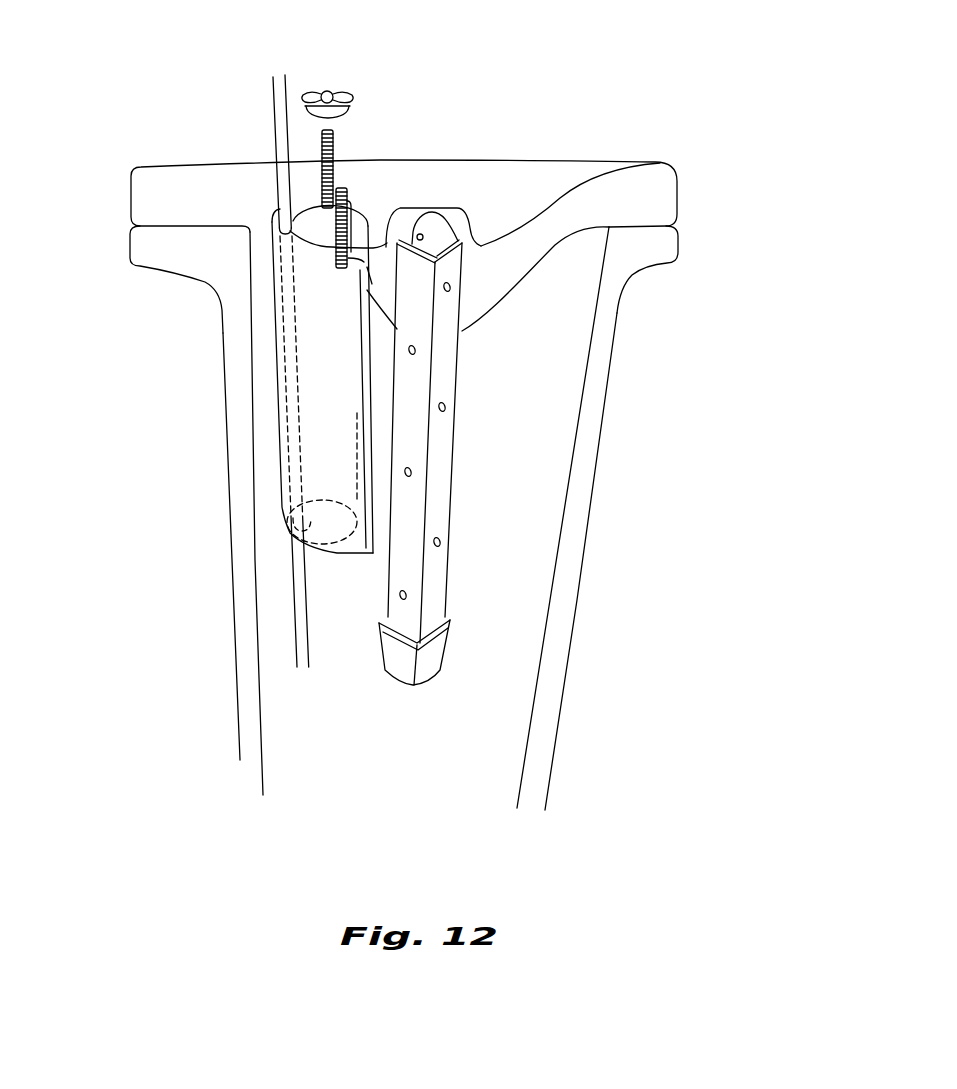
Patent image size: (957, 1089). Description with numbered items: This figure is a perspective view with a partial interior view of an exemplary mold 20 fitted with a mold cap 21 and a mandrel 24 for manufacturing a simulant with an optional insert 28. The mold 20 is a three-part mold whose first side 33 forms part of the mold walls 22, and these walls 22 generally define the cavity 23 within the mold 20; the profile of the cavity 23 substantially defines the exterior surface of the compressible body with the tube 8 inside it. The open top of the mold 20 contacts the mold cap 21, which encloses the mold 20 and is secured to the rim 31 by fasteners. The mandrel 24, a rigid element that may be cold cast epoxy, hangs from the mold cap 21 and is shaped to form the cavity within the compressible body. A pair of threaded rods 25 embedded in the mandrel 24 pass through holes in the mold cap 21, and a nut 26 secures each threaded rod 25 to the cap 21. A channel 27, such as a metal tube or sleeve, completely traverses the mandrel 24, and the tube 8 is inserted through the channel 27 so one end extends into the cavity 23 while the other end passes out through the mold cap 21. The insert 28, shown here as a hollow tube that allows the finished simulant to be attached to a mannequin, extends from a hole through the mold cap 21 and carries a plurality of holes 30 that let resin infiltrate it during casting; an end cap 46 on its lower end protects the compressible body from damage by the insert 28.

The tube 8 is at (282, 96).
The mold 20 is at (690, 306).
The mold cap 21 is at (657, 191).
The mold walls 22 is at (575, 543).
The cavity 23 is at (537, 400).
The mandrel 24 is at (313, 298).
The threaded rods 25 is at (350, 200).
The nut 26 is at (356, 93).
The channel 27 is at (372, 284).
The insert 28 is at (480, 244).
The holes 30 is at (418, 240).
The rim 31 is at (158, 245).
The first side 33 is at (245, 620).
The end cap 46 is at (437, 655).